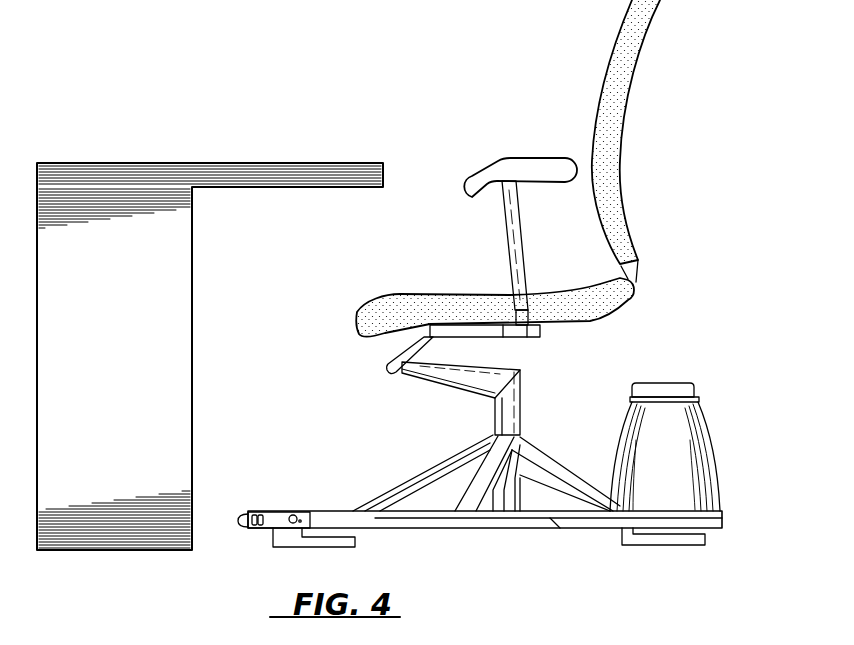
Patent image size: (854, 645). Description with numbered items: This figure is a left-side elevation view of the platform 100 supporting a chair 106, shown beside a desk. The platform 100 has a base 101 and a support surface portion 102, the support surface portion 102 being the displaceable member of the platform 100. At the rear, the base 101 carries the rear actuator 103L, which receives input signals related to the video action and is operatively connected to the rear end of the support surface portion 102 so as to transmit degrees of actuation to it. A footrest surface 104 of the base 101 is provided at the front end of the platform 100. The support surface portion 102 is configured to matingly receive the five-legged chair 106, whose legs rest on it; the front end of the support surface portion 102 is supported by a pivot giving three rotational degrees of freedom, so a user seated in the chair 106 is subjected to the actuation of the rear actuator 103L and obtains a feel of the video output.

The platform 100 is at (663, 328).
The base 101 is at (487, 529).
The support surface portion 102 is at (543, 494).
The rear actuator 103L is at (670, 440).
The footrest surface 104 is at (302, 511).
The chair 106 is at (620, 147).